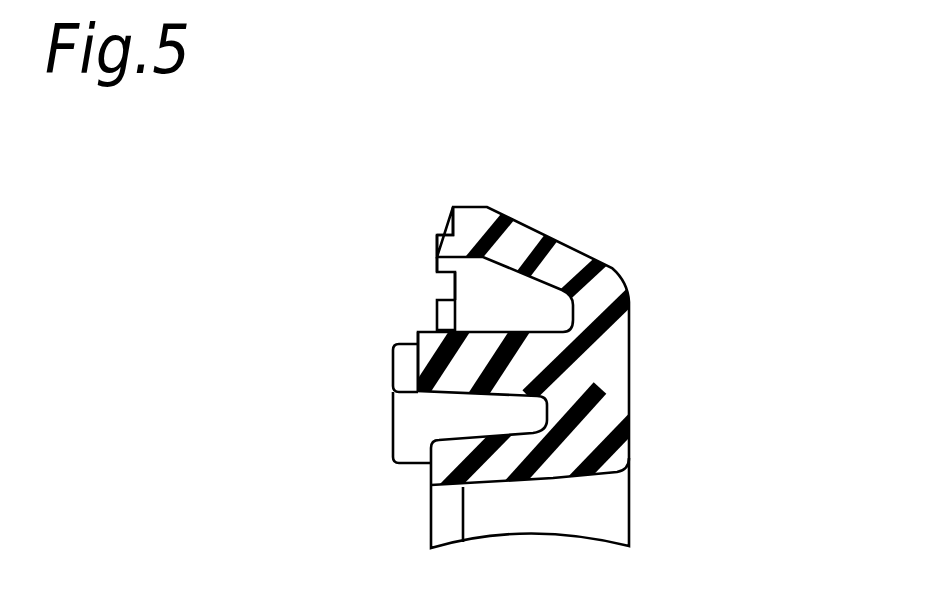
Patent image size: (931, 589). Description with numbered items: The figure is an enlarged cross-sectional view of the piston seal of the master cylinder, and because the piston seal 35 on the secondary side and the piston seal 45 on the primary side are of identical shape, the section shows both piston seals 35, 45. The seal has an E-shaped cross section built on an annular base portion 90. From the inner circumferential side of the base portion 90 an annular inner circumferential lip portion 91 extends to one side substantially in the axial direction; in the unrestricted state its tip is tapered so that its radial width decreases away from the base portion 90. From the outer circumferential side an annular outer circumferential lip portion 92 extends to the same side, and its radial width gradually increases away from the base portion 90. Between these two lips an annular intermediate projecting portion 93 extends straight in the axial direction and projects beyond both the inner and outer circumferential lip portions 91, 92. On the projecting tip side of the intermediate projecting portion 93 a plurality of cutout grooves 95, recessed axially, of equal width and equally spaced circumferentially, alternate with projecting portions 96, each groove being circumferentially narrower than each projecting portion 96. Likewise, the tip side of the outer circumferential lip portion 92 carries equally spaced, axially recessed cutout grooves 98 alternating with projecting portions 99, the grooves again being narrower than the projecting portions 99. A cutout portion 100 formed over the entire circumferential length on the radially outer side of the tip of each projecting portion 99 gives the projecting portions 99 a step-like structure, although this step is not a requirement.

The piston seal 35 is at (562, 334).
The piston seal 45 is at (698, 202).
The base portion 90 is at (630, 378).
The inner circumferential lip portion 91 is at (447, 477).
The outer circumferential lip portion 92 is at (474, 217).
The intermediate projecting portion 93 is at (417, 372).
The cutout grooves 95 is at (393, 350).
The projecting portions 96 is at (392, 417).
The cutout grooves 98 is at (455, 283).
The projecting portions 99 is at (437, 243).
The cutout portion 100 is at (454, 220).